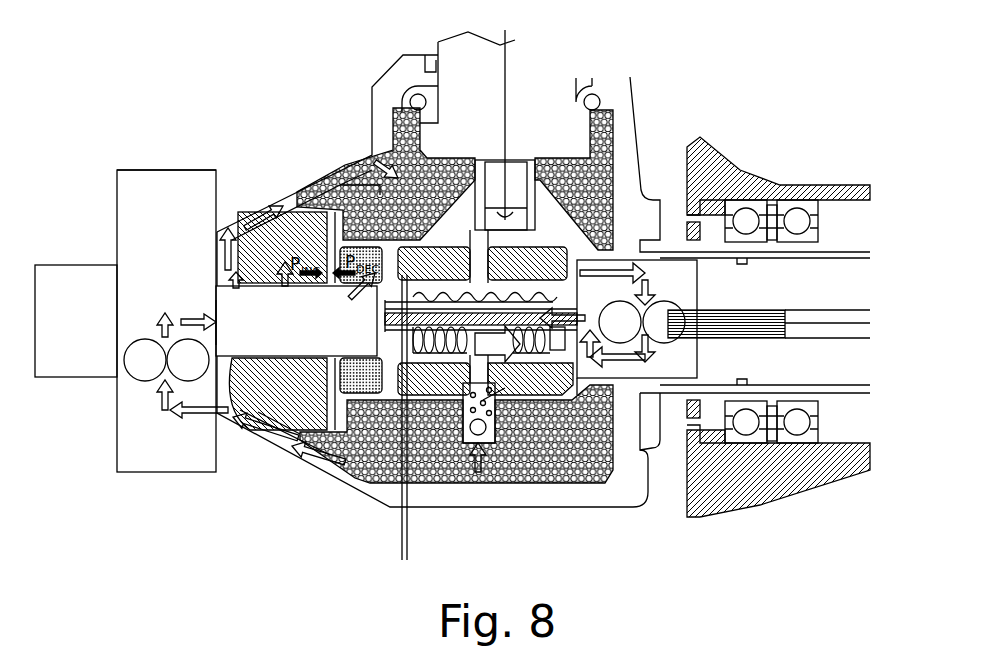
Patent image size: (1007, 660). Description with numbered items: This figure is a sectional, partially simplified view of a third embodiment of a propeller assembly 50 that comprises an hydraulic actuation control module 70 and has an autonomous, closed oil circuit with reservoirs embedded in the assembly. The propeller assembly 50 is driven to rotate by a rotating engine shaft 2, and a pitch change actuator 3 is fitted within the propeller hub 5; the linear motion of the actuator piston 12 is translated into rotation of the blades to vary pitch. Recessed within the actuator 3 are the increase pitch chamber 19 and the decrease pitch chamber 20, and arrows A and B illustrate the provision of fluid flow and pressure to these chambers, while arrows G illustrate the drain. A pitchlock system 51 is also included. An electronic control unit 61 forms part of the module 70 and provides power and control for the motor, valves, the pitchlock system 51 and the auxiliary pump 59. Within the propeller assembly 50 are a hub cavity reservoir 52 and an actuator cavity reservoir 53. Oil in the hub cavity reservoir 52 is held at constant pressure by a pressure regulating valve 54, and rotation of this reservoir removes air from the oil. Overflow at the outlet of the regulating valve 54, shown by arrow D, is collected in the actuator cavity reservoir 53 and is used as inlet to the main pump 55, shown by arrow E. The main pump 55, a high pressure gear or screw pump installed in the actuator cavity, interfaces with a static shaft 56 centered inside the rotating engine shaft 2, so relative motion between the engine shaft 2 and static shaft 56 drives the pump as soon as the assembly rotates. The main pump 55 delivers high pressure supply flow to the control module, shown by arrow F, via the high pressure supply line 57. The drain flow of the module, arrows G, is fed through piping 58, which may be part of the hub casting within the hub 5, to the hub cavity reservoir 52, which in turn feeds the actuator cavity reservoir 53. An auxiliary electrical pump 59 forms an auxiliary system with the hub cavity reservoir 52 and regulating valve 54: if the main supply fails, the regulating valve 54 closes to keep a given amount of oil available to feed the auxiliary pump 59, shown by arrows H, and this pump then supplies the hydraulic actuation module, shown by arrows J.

The rotating engine shaft 2 is at (668, 419).
The pitch change actuator 3 is at (372, 162).
The propeller hub 5 is at (373, 505).
The actuator piston 12 is at (338, 180).
The increase pitch chamber 19 is at (296, 203).
The decrease pitch chamber 20 is at (373, 393).
The propeller assembly 50 is at (648, 170).
The pitchlock system 51 is at (442, 353).
The hub cavity reservoir 52 is at (396, 115).
The actuator cavity reservoir 53 is at (535, 247).
The pressure regulating valve 54 is at (497, 448).
The main pump 55 is at (663, 267).
The static shaft 56 is at (795, 323).
The high pressure supply line 57 is at (413, 262).
The piping 58 is at (318, 157).
The auxiliary electrical pump 59 is at (117, 170).
The electronic control unit 61 is at (68, 380).
The hydraulic actuation control module 70 is at (162, 490).
The increase pitch flow arrow A is at (268, 325).
The decrease pitch flow arrow B is at (338, 325).
The regulating valve overflow arrow D is at (548, 385).
The main pump inlet flow arrow E is at (617, 262).
The high pressure supply flow arrow F is at (580, 348).
The drain flow arrows G is at (255, 210).
The auxiliary feed flow arrows H is at (337, 478).
The auxiliary supply flow arrows J is at (157, 325).